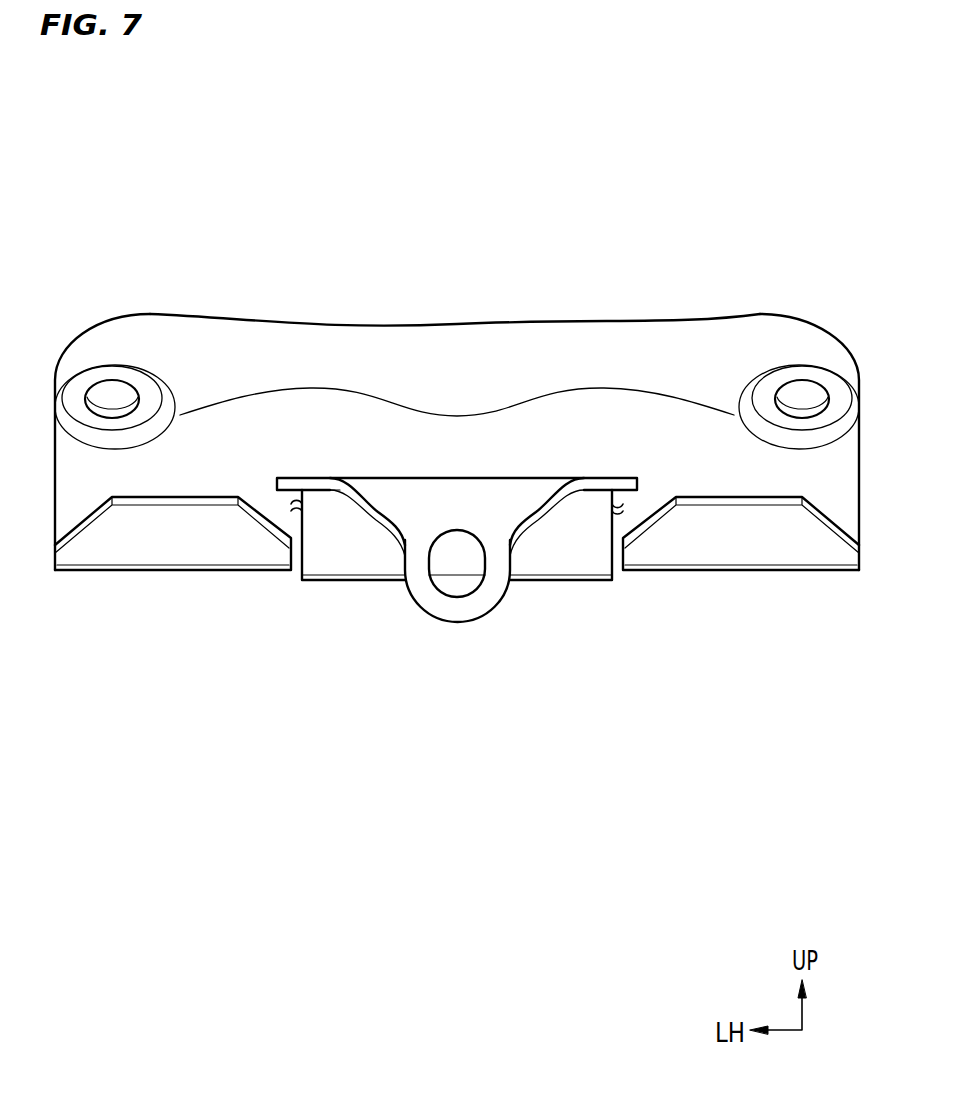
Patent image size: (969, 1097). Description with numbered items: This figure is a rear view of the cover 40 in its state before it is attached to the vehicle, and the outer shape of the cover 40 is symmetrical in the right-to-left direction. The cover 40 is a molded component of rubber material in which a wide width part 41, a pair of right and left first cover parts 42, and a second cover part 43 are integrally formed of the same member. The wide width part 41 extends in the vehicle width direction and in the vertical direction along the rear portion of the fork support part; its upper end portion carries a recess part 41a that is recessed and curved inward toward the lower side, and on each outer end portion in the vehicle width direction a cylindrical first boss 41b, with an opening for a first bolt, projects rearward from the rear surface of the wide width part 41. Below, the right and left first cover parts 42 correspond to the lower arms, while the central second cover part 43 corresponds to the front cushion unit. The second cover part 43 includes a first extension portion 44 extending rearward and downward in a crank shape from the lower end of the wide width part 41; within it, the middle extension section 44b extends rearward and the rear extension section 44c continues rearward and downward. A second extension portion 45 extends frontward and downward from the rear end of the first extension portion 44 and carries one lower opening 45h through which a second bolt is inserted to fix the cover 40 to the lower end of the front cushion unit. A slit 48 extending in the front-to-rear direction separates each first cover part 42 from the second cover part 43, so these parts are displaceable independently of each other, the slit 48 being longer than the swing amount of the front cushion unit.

The cover 40 is at (787, 103).
The wide width part 41 is at (308, 423).
The recess part 41a is at (402, 323).
The first boss 41b is at (116, 374).
The first cover part 42 is at (123, 547).
The second cover part 43 is at (635, 685).
The first extension portion 44 is at (588, 550).
The middle extension section 44b is at (358, 547).
The rear extension section 44c is at (606, 476).
The second extension portion 45 is at (517, 512).
The lower opening 45h is at (455, 590).
The slit 48 is at (295, 528).